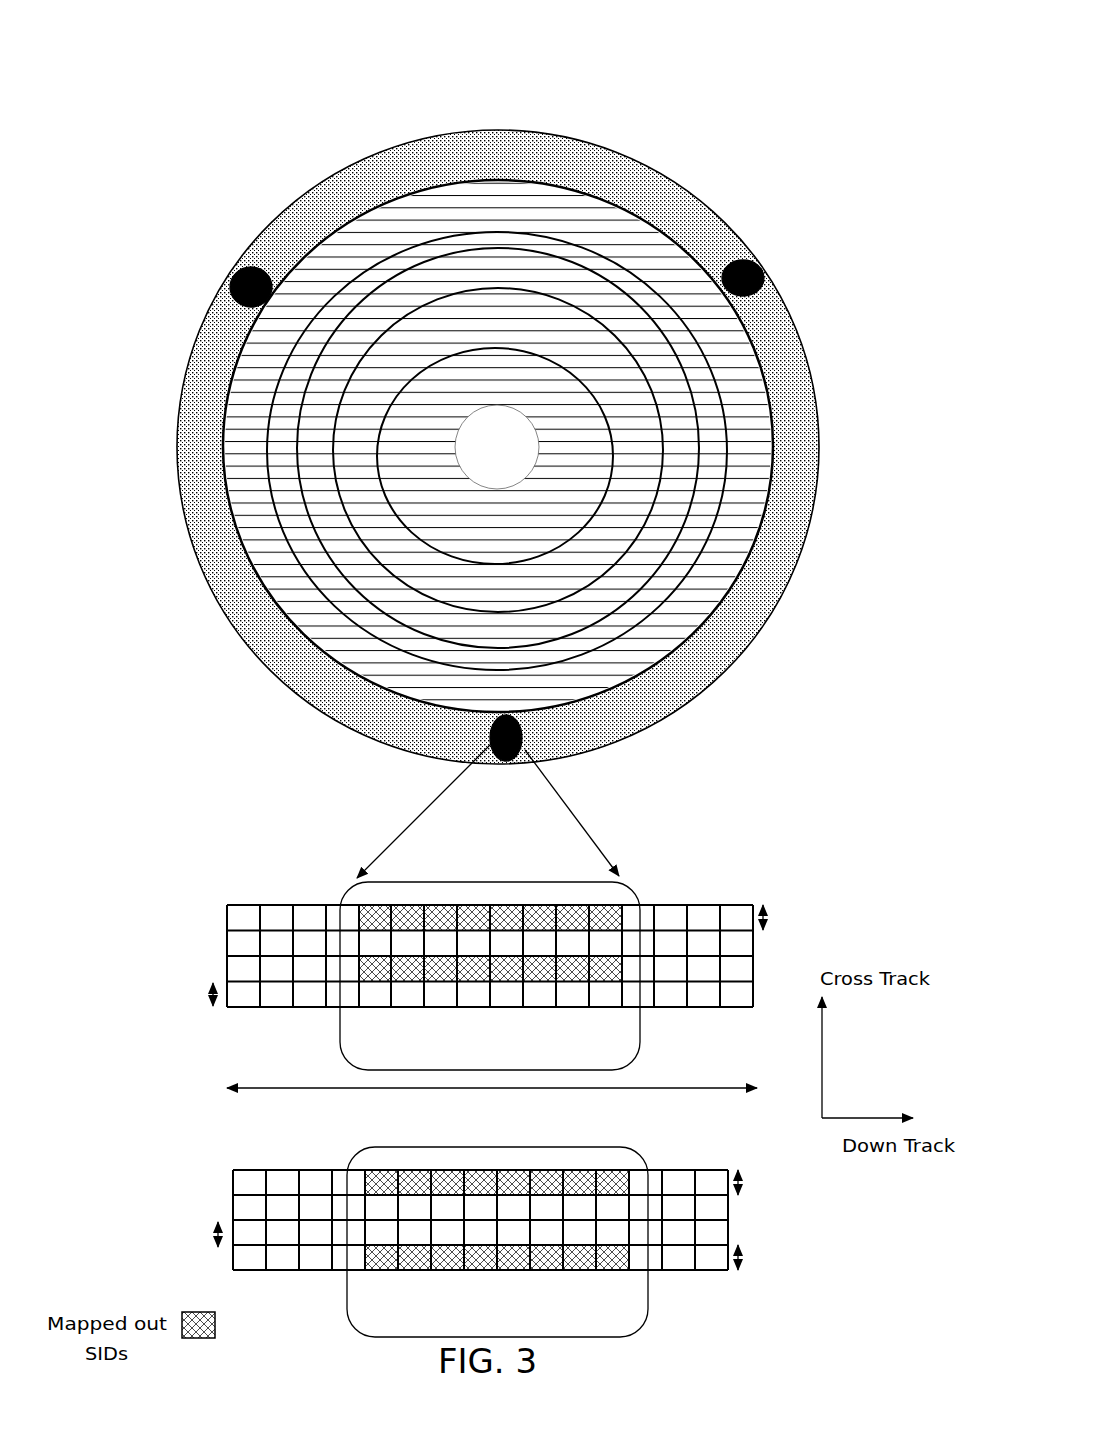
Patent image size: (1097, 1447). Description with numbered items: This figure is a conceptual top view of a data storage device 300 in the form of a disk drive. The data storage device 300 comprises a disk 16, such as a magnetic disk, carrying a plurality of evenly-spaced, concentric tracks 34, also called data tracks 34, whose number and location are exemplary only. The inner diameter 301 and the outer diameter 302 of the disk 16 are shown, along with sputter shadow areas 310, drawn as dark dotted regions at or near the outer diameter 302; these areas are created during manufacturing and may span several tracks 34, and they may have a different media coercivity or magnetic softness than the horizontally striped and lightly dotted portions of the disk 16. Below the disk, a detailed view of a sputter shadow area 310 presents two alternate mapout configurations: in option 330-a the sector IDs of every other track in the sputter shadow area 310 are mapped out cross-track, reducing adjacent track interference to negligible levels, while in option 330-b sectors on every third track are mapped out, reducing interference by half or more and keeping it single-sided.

The data storage device 300 is at (118, 63).
The disk 16 is at (376, 142).
The inner diameter 301 is at (449, 466).
The outer diameter 302 is at (269, 676).
The tracks 34 is at (678, 510).
The sputter shadow areas 310 is at (623, 1315).
The mapout configuration 330-a is at (188, 916).
The mapout configuration 330-b is at (210, 1176).